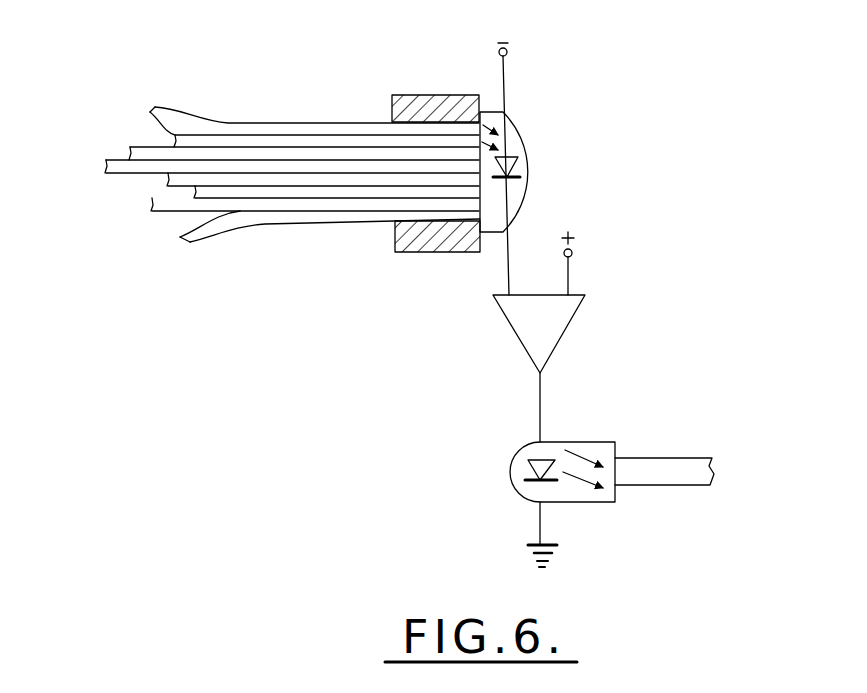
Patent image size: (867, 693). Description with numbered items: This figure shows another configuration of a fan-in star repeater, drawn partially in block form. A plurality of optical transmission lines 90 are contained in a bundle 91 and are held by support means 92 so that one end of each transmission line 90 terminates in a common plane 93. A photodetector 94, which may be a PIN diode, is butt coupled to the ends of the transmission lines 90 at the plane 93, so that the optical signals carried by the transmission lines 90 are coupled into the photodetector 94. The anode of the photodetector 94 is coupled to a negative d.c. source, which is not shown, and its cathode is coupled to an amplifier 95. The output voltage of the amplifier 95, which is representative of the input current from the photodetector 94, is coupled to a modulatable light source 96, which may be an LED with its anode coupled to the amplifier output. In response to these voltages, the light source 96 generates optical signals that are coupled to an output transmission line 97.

The optical transmission lines 90 is at (175, 140).
The bundle 91 is at (280, 118).
The support means 92 is at (427, 94).
The plane 93 is at (487, 215).
The photodetector 94 is at (513, 142).
The amplifier 95 is at (573, 318).
The modulatable light source 96 is at (523, 473).
The output transmission line 97 is at (650, 458).